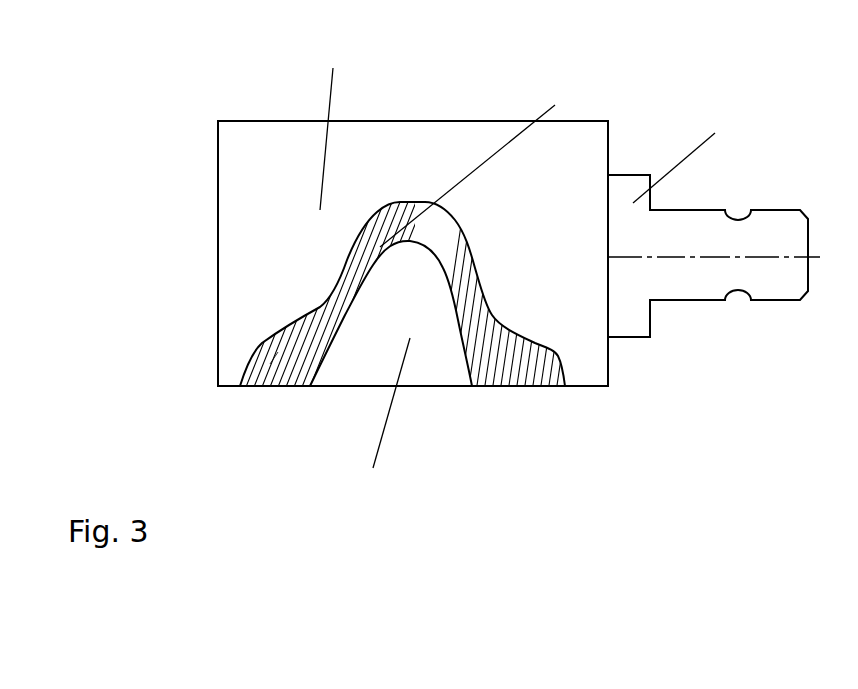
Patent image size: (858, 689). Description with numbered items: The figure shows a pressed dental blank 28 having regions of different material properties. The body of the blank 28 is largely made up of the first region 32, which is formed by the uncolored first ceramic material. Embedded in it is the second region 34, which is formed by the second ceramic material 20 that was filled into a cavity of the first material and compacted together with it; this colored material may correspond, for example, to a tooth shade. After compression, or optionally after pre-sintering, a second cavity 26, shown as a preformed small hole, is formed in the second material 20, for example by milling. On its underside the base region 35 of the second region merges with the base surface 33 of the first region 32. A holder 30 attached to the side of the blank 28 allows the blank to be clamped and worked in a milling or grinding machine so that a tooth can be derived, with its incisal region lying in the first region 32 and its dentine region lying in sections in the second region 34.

The second ceramic material 20 is at (507, 360).
The second cavity 26 is at (363, 363).
The blank 28 is at (218, 311).
The holder 30 is at (653, 285).
The first region 32 is at (277, 212).
The base surface of the first region 33 is at (227, 386).
The second region 34 is at (275, 358).
The base region 35 is at (295, 387).